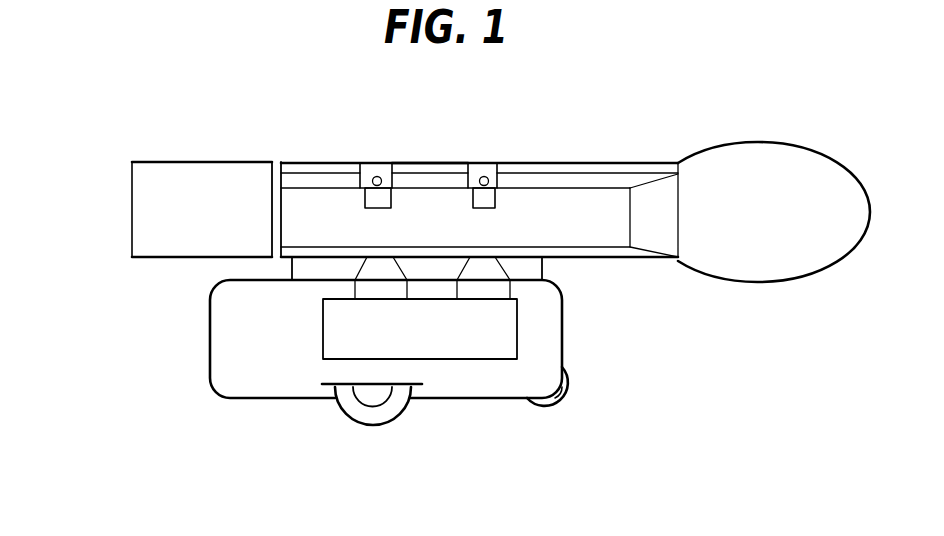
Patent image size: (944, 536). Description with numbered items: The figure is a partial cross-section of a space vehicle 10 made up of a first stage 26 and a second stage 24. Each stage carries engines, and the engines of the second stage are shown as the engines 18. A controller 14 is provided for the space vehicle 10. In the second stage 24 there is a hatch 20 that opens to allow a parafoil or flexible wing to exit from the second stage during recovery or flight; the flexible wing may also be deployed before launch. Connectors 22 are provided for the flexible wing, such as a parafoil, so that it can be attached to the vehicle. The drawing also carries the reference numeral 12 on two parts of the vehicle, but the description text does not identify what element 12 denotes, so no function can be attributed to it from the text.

The space vehicle 10 is at (634, 357).
The support members 12 is at (268, 226).
The controller 14 is at (545, 267).
The engines 18 is at (227, 180).
The hatch 20 is at (447, 162).
The connectors 22 is at (378, 162).
The second stage 24 is at (157, 212).
The first stage 26 is at (252, 334).